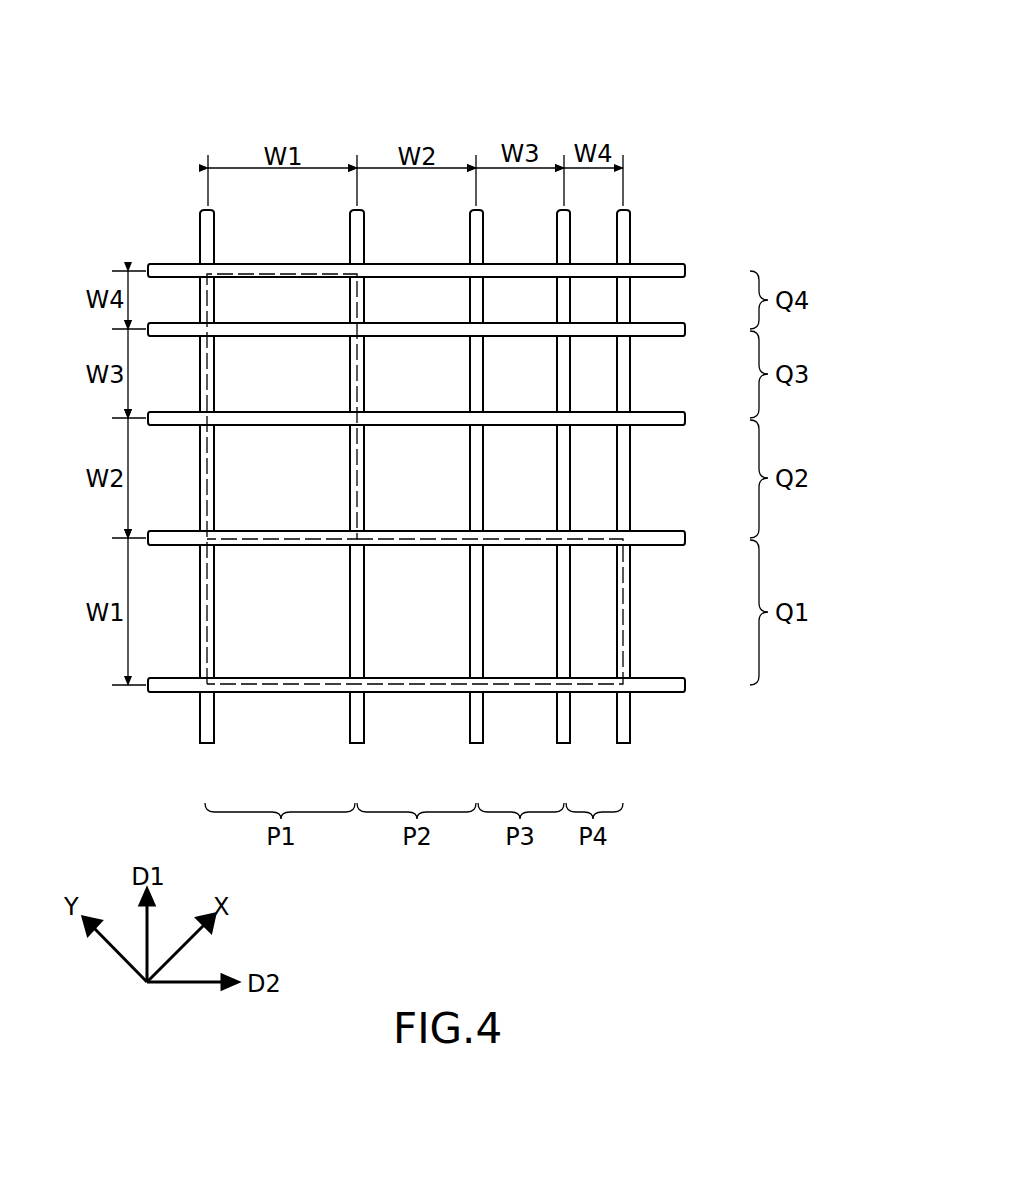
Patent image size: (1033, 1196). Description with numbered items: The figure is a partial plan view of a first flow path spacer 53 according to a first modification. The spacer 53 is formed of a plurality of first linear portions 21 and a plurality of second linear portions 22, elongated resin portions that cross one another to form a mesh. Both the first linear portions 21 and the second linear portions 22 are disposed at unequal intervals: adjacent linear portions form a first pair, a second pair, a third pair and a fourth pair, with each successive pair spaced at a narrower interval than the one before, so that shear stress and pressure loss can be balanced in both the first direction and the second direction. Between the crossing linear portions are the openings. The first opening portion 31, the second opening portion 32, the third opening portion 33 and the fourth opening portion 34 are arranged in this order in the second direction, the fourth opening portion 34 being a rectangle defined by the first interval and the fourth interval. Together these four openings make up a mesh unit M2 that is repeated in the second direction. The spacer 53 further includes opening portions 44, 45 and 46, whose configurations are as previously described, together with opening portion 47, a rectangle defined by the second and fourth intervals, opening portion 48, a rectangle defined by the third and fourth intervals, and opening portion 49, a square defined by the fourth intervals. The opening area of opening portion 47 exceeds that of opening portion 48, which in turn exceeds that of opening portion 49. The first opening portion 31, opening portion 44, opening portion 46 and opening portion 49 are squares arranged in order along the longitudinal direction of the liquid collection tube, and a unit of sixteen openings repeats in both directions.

The first flow path spacer 53 is at (676, 97).
The first linear portions 21 is at (208, 735).
The second linear portions 22 is at (668, 268).
The mesh unit M2 is at (278, 268).
The first opening portion 31 is at (267, 625).
The second opening portion 32 is at (267, 491).
The third opening portion 33 is at (267, 387).
The fourth opening portion 34 is at (267, 313).
The opening portion 44 is at (402, 491).
The opening portion 45 is at (402, 387).
The opening portion 46 is at (505, 387).
The opening portion 47 is at (402, 313).
The opening portion 48 is at (505, 313).
The opening portion 49 is at (578, 313).